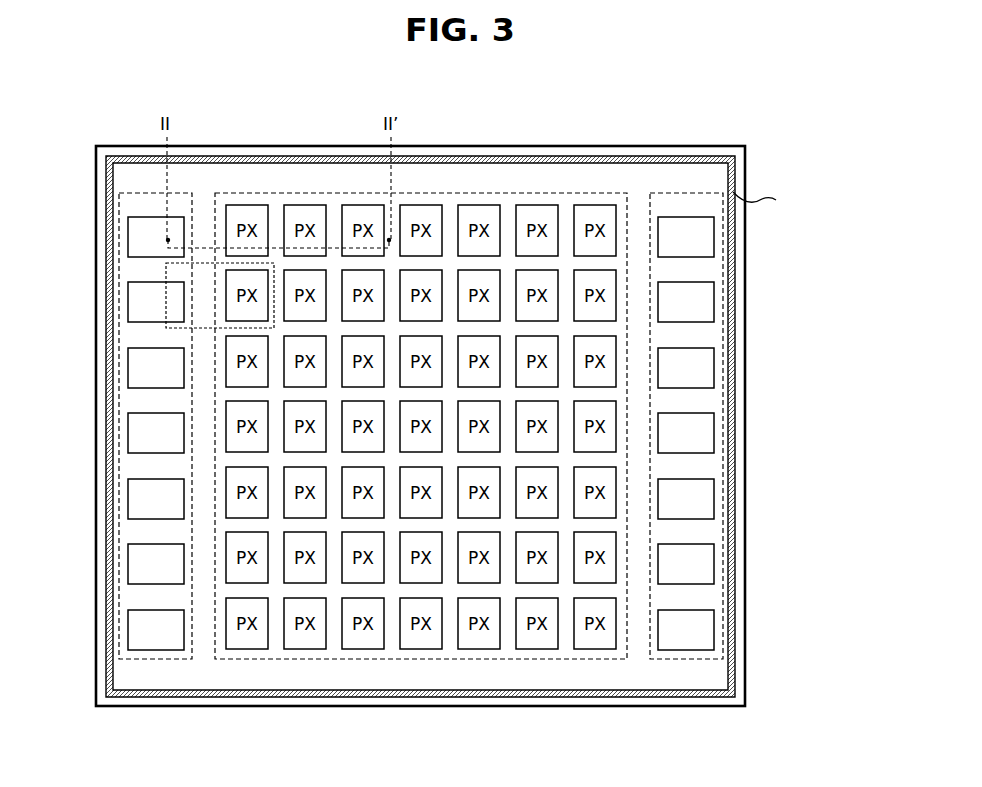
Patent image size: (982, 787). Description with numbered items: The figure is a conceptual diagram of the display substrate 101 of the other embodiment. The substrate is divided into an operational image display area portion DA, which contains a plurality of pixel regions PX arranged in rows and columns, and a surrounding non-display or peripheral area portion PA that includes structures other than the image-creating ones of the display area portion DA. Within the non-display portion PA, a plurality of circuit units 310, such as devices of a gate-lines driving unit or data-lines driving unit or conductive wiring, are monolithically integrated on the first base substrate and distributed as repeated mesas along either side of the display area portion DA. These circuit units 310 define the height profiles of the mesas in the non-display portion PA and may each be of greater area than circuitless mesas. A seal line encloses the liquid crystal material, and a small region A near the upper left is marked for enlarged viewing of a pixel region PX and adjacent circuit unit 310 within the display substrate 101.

The display substrate 101 is at (738, 129).
The circuit unit 310 is at (723, 423).
The non-display portion PA is at (400, 688).
The display area portion DA is at (327, 662).
The pixel region PX is at (421, 427).
The region A is at (166, 268).